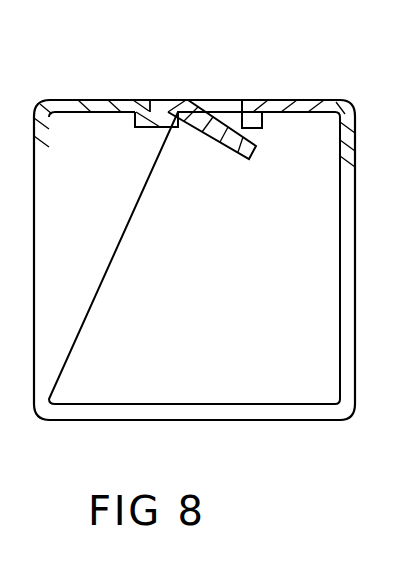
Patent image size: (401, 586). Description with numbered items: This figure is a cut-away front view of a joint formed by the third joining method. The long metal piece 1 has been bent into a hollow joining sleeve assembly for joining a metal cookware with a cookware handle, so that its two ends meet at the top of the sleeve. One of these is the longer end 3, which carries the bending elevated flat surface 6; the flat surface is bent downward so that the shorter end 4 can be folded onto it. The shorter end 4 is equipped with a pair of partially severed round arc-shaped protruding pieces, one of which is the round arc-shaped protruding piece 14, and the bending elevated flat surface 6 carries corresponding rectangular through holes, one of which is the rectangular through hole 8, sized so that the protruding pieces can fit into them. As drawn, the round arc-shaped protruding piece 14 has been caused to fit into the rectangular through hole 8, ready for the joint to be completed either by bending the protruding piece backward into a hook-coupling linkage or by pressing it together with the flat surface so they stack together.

The long metal piece 1 is at (189, 407).
The longer end 3 is at (100, 99).
The shorter end 4 is at (280, 101).
The bending elevated flat surface 6 is at (252, 121).
The rectangular through hole 8 is at (187, 129).
The round arc-shaped protruding piece 14 is at (238, 149).